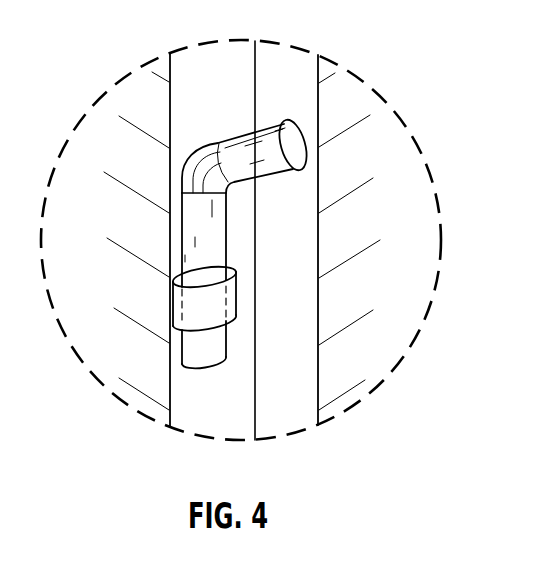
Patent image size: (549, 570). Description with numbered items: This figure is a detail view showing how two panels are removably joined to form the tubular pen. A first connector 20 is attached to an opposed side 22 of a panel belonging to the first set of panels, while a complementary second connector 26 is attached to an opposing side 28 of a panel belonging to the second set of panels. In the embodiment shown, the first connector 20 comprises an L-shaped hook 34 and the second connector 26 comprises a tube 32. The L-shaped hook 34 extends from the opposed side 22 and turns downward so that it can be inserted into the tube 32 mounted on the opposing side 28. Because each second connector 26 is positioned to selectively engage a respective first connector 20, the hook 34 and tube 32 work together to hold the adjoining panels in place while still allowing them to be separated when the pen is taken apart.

The first connector 20 is at (238, 158).
The opposed side 22 is at (312, 58).
The second connector 26 is at (182, 298).
The opposing side 28 is at (188, 67).
The tube 32 is at (203, 312).
The L-shaped hook 34 is at (285, 155).